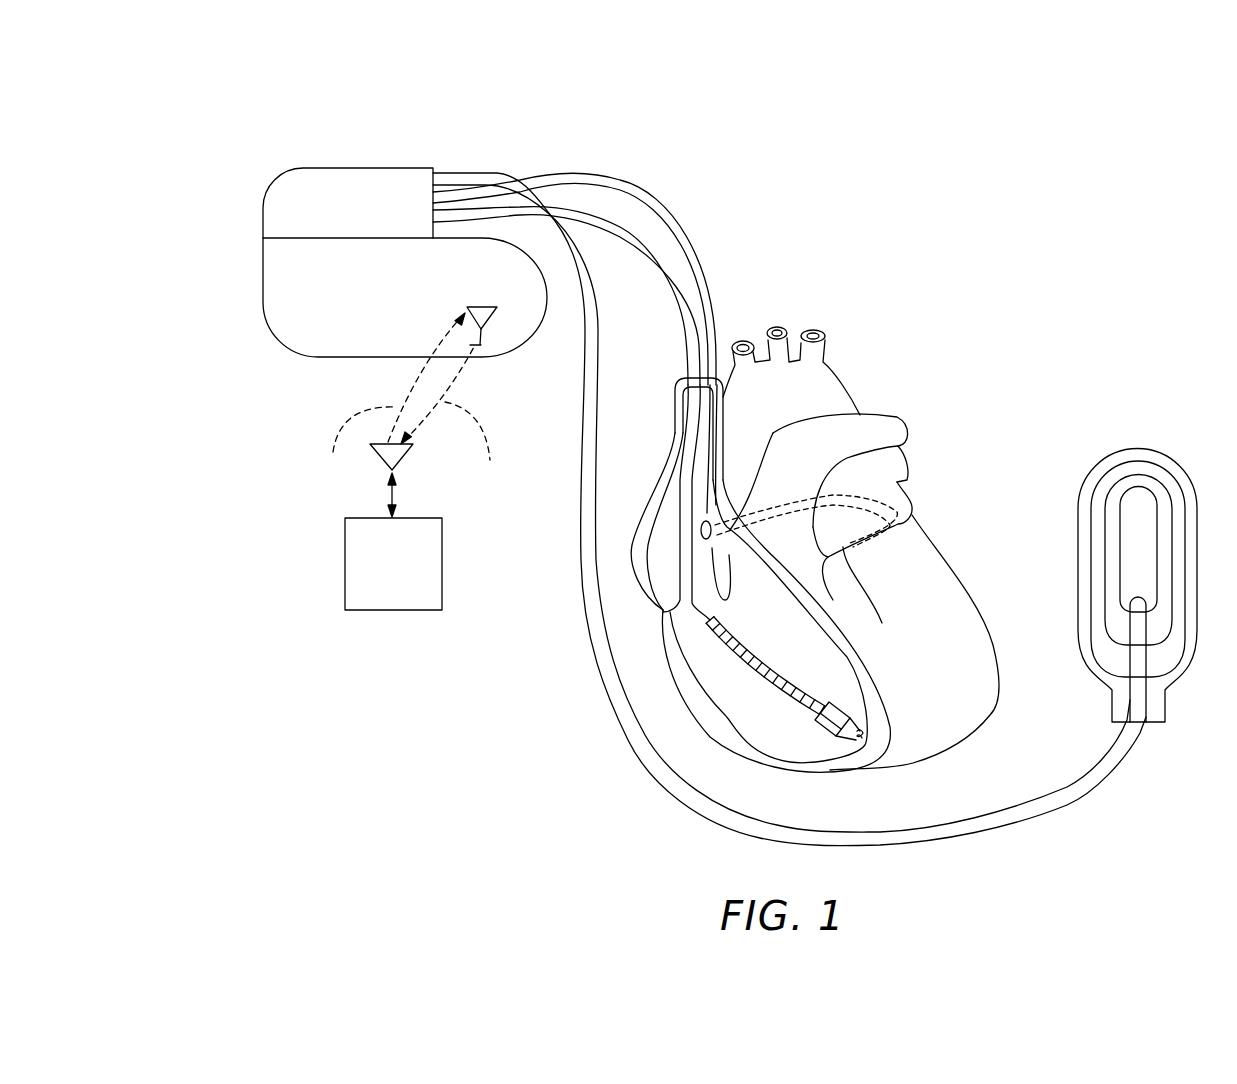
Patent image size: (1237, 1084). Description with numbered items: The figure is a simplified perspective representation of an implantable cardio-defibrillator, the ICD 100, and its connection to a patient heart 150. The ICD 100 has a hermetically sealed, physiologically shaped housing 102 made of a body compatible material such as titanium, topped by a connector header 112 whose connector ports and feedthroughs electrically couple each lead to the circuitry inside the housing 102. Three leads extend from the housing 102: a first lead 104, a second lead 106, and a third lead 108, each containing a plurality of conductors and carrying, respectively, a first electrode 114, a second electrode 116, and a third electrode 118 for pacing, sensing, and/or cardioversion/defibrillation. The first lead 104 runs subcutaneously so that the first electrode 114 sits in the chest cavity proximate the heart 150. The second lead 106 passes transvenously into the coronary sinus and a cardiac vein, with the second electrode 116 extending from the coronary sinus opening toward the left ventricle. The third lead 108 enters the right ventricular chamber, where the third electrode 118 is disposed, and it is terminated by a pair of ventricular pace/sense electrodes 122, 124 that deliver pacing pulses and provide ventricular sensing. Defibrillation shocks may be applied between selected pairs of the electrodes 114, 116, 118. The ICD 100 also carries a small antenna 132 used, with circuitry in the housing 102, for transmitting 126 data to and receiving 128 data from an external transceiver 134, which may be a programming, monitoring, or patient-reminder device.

The ICD 100 is at (370, 263).
The housing 102 is at (357, 333).
The first lead 104 is at (585, 377).
The second lead 106 is at (624, 188).
The third lead 108 is at (633, 250).
The connector header 112 is at (337, 190).
The first electrode 114 is at (1167, 467).
The second electrode 116 is at (850, 490).
The third electrode 118 is at (720, 640).
The ventricular pace/sense electrode 122 is at (863, 737).
The ventricular pace/sense electrode 124 is at (827, 730).
The transmitting 126 is at (475, 447).
The receiving 128 is at (393, 415).
The antenna 132 is at (496, 310).
The external transceiver 134 is at (340, 582).
The heart 150 is at (730, 737).